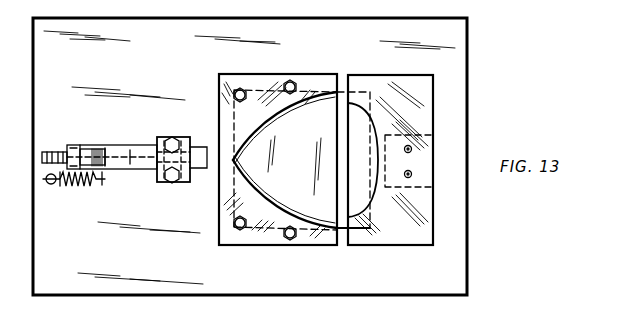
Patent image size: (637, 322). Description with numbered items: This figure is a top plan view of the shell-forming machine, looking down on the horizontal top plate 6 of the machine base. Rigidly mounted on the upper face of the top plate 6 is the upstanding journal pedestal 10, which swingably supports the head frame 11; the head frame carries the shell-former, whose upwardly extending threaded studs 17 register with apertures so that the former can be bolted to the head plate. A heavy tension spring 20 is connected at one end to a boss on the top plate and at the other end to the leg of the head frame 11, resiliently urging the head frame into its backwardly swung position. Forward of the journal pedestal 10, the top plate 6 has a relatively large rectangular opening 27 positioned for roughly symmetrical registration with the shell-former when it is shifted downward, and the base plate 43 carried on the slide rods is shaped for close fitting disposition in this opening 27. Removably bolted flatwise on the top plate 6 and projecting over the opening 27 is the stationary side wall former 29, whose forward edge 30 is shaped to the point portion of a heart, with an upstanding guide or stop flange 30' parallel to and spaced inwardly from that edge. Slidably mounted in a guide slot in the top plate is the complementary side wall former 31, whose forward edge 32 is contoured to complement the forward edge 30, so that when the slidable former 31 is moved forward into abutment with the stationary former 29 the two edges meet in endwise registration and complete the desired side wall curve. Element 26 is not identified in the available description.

The top plate 6 is at (148, 62).
The journal pedestal 10 is at (179, 143).
The head frame 11 is at (132, 148).
The threaded studs 17 is at (76, 150).
The tension spring 20 is at (77, 182).
The rod 26 is at (60, 152).
The rectangular opening 27 is at (343, 92).
The side wall former 29 is at (259, 83).
The forward edge 30 is at (285, 127).
The guide or stop flange 30' is at (285, 192).
The complementary side wall former 31 is at (420, 118).
The forward edge 32 is at (368, 190).
The base plate 43 is at (330, 166).